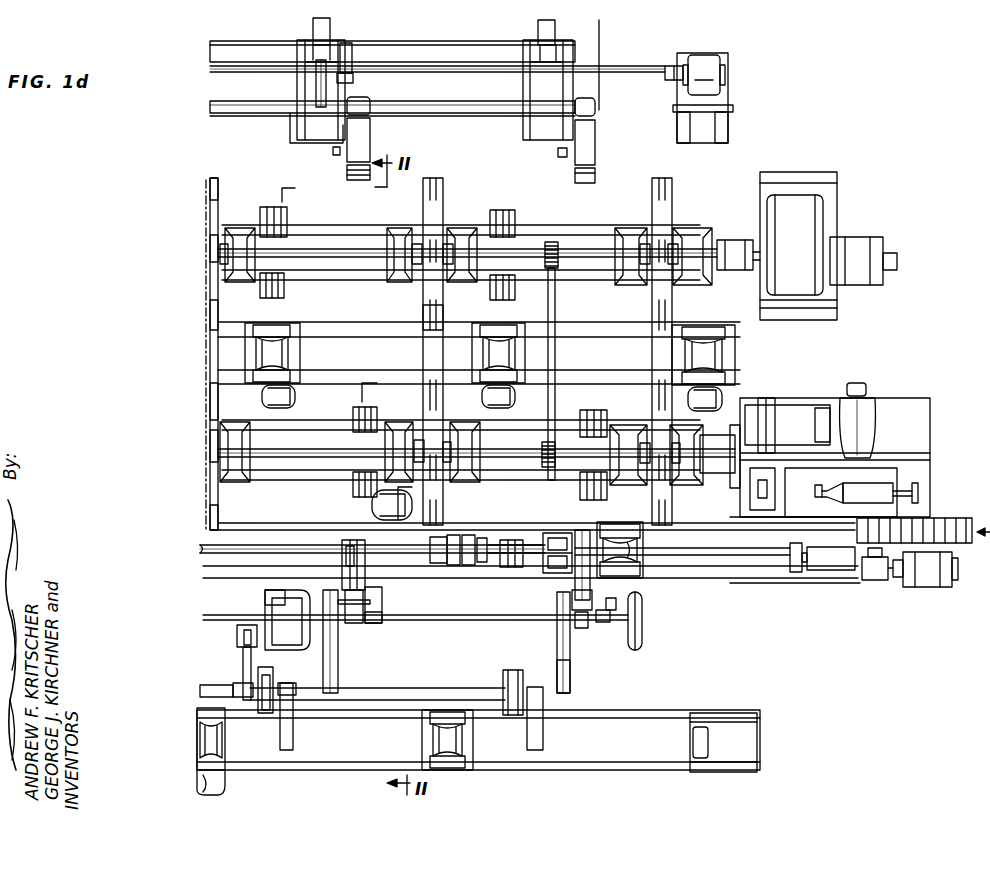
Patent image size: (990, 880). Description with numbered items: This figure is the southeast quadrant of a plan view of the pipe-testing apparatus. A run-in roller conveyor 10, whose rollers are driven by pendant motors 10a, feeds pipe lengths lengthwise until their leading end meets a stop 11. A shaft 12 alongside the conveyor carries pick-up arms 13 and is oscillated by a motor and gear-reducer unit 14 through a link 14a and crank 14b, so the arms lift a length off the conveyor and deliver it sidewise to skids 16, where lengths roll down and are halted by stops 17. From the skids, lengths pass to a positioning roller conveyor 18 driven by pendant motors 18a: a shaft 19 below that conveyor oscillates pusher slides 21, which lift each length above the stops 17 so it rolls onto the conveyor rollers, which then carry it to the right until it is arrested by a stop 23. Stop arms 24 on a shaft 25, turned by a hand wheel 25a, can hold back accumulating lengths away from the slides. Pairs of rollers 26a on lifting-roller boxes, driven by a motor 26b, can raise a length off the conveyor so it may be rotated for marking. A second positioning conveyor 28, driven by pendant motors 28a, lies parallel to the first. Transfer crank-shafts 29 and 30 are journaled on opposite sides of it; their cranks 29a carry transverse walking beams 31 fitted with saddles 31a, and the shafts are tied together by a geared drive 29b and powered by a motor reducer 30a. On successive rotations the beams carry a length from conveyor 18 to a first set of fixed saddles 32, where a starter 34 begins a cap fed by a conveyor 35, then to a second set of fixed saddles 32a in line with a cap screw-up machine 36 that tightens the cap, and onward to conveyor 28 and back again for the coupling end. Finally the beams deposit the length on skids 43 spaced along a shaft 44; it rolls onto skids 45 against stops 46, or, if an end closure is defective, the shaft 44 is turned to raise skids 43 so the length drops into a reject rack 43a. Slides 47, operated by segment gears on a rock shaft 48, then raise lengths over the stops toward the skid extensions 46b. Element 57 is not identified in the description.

The run-in roller conveyor 10 is at (355, 745).
The pendant motors 10a is at (222, 784).
The stop 11 is at (692, 743).
The shaft 12 is at (405, 689).
The pick-up arms 13 is at (294, 740).
The motor and gear-reducer unit 14 is at (302, 641).
The link 14a is at (246, 625).
The crank 14b is at (244, 661).
The skids 16 is at (339, 674).
The stops 17 is at (591, 589).
The positioning roller conveyor 18 is at (641, 553).
The pendant motors 18a is at (379, 508).
The shaft 19 is at (216, 546).
The pusher slides 21 is at (364, 598).
The stop 23 is at (790, 558).
The stop arms 24 is at (383, 601).
The shaft 25 is at (462, 621).
The hand wheel 25a is at (643, 633).
The rollers 26a is at (555, 543).
The motor 26b is at (463, 566).
The second positioning conveyor 28 is at (300, 357).
The pendant motors 28a is at (287, 399).
The transfer crank-shaft 29 is at (508, 447).
The cranks 29a is at (455, 250).
The geared drive 29b is at (559, 264).
The transfer crank-shaft 30 is at (330, 247).
The motor reducer 30a is at (806, 283).
The walking beams 31 is at (428, 292).
The saddles 31a is at (446, 318).
The fixed saddles 32 is at (371, 420).
The fixed saddles 32a is at (514, 216).
The starter 34 is at (858, 498).
The conveyor 35 is at (940, 525).
The cap screw-up machine 36 is at (790, 416).
The skids 43 is at (333, 152).
The reject rack 43a is at (371, 148).
The shaft 44 is at (259, 110).
The skids 45 is at (316, 91).
The stops 46 is at (317, 45).
The skid extensions 46b is at (331, 31).
The slides 47 is at (350, 53).
The rock shaft 48 is at (458, 70).
The guide rod 57 is at (217, 117).